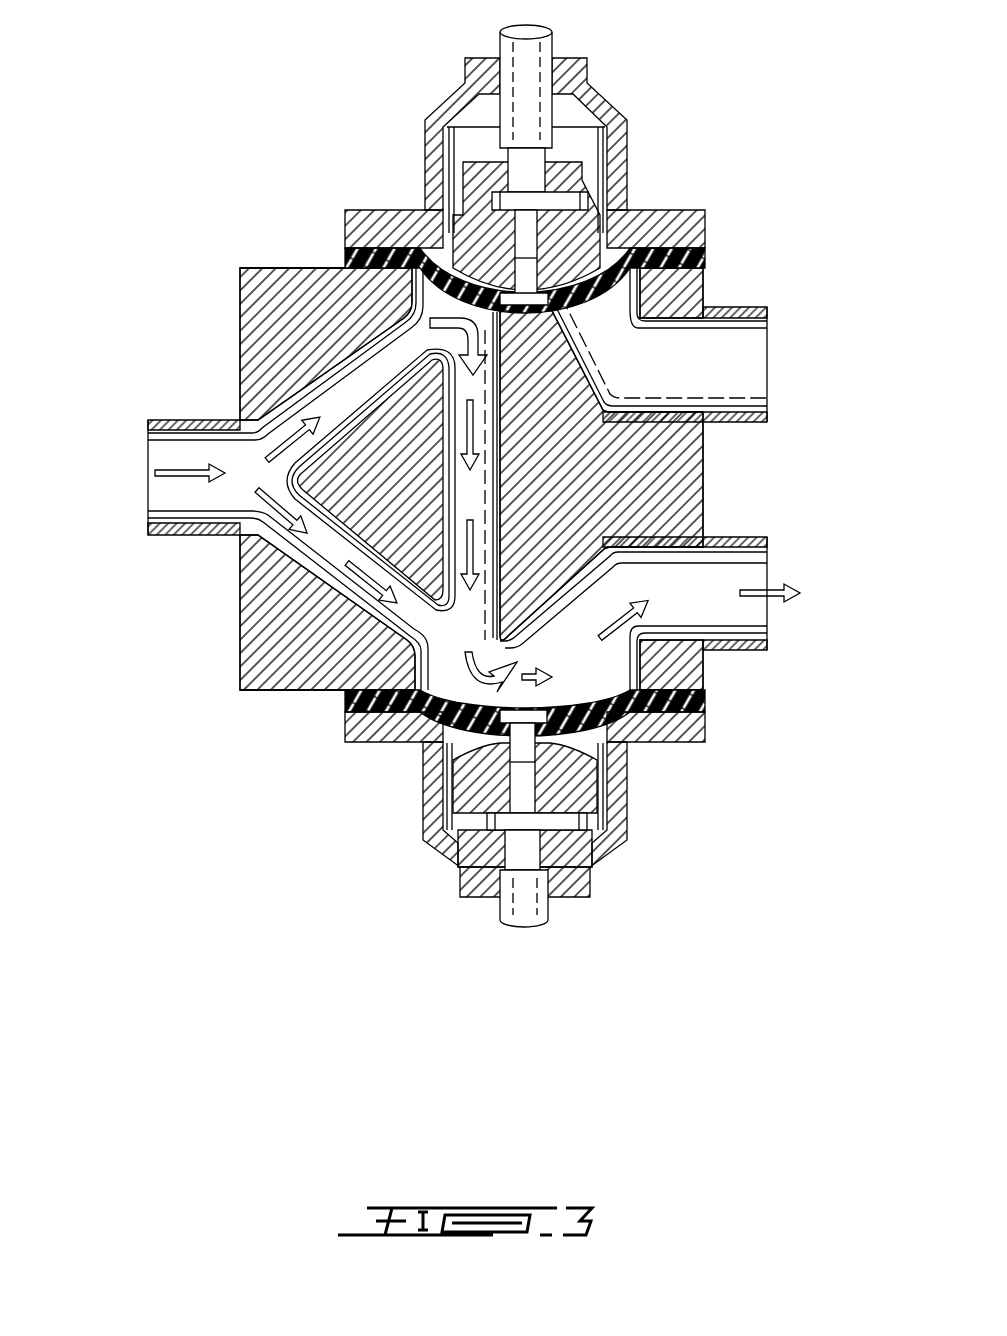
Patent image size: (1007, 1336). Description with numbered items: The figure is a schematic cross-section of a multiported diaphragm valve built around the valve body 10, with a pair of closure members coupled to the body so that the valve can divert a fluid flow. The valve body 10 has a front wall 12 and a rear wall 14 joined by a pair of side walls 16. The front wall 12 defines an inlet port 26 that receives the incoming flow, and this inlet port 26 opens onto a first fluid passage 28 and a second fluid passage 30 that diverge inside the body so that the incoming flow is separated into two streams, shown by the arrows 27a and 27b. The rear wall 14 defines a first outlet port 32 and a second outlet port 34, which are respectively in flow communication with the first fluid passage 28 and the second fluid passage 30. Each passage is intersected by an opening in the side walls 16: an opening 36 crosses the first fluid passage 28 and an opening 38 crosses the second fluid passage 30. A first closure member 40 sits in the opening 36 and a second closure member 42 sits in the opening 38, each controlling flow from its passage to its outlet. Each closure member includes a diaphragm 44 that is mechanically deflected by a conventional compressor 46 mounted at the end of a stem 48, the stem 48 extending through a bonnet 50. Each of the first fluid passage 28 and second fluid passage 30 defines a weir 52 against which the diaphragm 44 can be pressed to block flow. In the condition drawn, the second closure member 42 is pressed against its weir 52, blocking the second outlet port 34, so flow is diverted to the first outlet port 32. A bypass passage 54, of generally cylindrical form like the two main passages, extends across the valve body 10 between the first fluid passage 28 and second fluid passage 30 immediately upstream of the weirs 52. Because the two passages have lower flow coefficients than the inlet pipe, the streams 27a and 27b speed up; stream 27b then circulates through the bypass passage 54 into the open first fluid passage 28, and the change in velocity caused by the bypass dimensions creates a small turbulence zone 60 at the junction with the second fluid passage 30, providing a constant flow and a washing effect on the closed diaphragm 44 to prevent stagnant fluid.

The valve body 10 is at (239, 692).
The front wall 12 is at (239, 397).
The rear wall 14 is at (706, 475).
The side wall 16 is at (423, 335).
The inlet port 26 is at (147, 460).
The first fluid stream 27a is at (352, 585).
The second fluid stream 27b is at (357, 375).
The first fluid passage 28 is at (461, 494).
The second fluid passage 30 is at (450, 415).
The first outlet port 32 is at (768, 568).
The second outlet port 34 is at (768, 370).
The opening 36 is at (440, 668).
The opening 38 is at (437, 296).
The first closure member 40 is at (399, 822).
The second closure member 42 is at (403, 117).
The diaphragm 44 is at (709, 256).
The compressor 46 is at (602, 244).
The stem 48 is at (553, 74).
The bonnet 50 is at (610, 98).
The weir 52 is at (507, 658).
The bypass passage 54 is at (327, 556).
The turbulence zone 60 is at (293, 265).